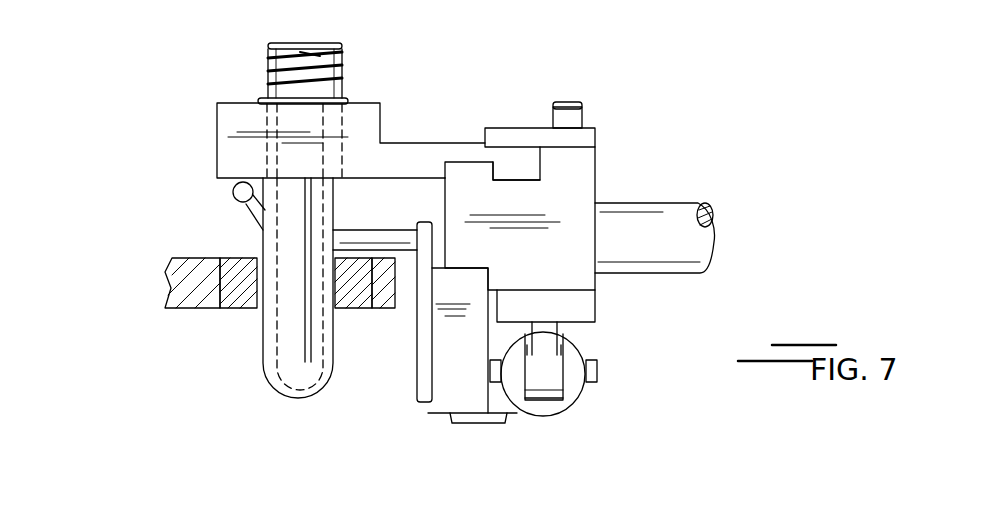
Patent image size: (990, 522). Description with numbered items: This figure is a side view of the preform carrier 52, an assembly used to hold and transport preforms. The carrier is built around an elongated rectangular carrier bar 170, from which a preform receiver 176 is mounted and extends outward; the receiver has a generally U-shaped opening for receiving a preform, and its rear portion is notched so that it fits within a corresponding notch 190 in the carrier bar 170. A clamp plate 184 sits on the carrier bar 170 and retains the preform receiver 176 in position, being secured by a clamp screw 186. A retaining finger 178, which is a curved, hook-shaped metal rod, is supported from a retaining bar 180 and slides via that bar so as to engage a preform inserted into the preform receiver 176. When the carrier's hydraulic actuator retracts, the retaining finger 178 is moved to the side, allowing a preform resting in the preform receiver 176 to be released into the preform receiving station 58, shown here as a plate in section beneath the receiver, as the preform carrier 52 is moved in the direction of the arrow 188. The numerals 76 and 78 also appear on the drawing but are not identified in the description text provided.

The preform carrier 52 is at (613, 144).
The preform receiving station 58 is at (205, 316).
The adjustment screw 76 is at (347, 67).
The tubular housing 78 is at (262, 345).
The carrier bar 170 is at (562, 270).
The preform receiver 176 is at (217, 158).
The retaining finger 178 is at (233, 192).
The retaining bar 180 is at (440, 372).
The clamp plate 184 is at (505, 123).
The clamp screw 186 is at (566, 102).
The arrow 188 is at (740, 239).
The notch 190 is at (518, 183).